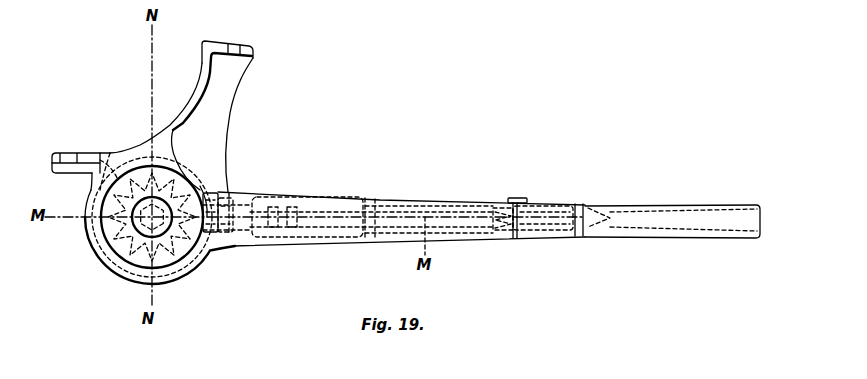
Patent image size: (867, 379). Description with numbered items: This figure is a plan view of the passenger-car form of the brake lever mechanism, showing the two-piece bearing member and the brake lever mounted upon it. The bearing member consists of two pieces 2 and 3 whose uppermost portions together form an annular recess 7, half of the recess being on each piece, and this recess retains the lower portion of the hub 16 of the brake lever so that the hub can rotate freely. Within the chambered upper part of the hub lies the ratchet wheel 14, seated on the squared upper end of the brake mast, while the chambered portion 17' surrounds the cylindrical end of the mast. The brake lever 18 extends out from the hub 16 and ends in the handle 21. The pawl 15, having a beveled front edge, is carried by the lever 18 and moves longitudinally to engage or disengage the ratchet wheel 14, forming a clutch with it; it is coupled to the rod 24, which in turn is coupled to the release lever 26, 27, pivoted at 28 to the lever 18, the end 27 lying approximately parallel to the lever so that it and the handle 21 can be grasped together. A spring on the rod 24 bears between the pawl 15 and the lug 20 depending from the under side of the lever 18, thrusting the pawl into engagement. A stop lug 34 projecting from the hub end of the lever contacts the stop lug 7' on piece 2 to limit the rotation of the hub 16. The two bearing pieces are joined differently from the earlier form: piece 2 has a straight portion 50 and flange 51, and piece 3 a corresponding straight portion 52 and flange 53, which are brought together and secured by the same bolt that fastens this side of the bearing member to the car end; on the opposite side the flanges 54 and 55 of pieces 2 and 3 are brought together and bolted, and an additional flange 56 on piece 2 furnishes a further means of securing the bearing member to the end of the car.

The bearing piece 2 is at (209, 76).
The bearing piece 3 is at (169, 251).
The annular recess 7 is at (187, 160).
The stop lug 7' is at (73, 200).
The ratchet wheel 14 is at (125, 281).
The pawl 15 is at (254, 196).
The hub 16 is at (125, 257).
The chambered portion 17' is at (120, 217).
The brake lever 18 is at (404, 206).
The lug 20 is at (366, 203).
The handle 21 is at (690, 214).
The rod 24 is at (465, 239).
The lever 26 is at (533, 240).
The lever end 27 is at (600, 210).
The pivot 28 is at (516, 200).
The stop lug 34 is at (200, 267).
The straight portion 50 is at (110, 155).
The flange 51 is at (60, 153).
The straight portion 52 is at (90, 153).
The flange 53 is at (57, 166).
The flange 54 is at (229, 192).
The flange 55 is at (228, 222).
The flange 56 is at (253, 49).